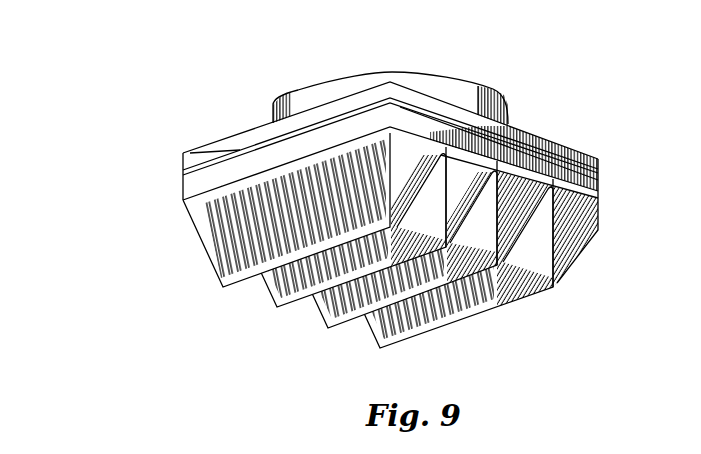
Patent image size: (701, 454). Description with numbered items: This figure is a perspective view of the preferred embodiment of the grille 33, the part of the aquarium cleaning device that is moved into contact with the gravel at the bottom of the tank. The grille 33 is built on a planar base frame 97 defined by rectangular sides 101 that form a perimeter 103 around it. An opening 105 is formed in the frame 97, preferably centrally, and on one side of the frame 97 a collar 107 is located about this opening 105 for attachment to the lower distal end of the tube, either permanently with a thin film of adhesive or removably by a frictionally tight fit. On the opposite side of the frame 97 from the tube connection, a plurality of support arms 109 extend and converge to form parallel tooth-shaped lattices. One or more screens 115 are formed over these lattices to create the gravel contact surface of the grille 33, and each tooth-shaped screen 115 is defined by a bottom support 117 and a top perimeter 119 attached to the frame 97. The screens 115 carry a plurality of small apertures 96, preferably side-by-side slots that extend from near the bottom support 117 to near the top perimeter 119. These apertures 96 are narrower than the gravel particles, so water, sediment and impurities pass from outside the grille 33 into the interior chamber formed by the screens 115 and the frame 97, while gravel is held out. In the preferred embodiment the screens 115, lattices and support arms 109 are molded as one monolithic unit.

The grille 33 is at (250, 109).
The apertures 96 is at (355, 307).
The planar base frame 97 is at (600, 190).
The rectangular sides 101 is at (600, 159).
The perimeter 103 is at (190, 153).
The opening 105 is at (444, 74).
The collar 107 is at (376, 72).
The support arms 109 is at (208, 247).
The screens 115 is at (254, 279).
The bottom support 117 is at (287, 300).
The top perimeter 119 is at (600, 200).